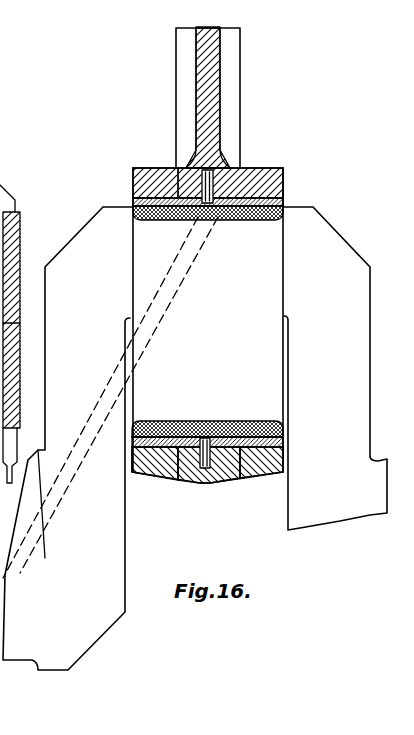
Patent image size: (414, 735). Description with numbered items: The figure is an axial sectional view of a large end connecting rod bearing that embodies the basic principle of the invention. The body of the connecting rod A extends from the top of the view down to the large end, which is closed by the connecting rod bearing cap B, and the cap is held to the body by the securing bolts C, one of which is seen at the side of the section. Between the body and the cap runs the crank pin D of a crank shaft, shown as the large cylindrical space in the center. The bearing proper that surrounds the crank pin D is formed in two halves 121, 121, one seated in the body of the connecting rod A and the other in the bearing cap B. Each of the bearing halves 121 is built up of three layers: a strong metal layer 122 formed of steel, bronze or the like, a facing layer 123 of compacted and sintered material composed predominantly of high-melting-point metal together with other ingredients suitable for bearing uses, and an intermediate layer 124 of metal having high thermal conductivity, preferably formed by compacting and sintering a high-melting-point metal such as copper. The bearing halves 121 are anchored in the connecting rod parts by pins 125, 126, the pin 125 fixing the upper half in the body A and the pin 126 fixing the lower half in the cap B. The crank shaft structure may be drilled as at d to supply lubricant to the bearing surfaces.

The bearing half 121 is at (217, 222).
The strong metal layer 122 is at (147, 223).
The facing layer 123 is at (235, 222).
The intermediate layer 124 is at (253, 222).
The pin 125 is at (230, 180).
The pin 126 is at (203, 485).
The body of the connecting rod A is at (232, 110).
The connecting rod bearing cap B is at (167, 478).
The securing bolts C is at (0, 176).
The crank pin D is at (208, 320).
The drilled passage d is at (97, 393).